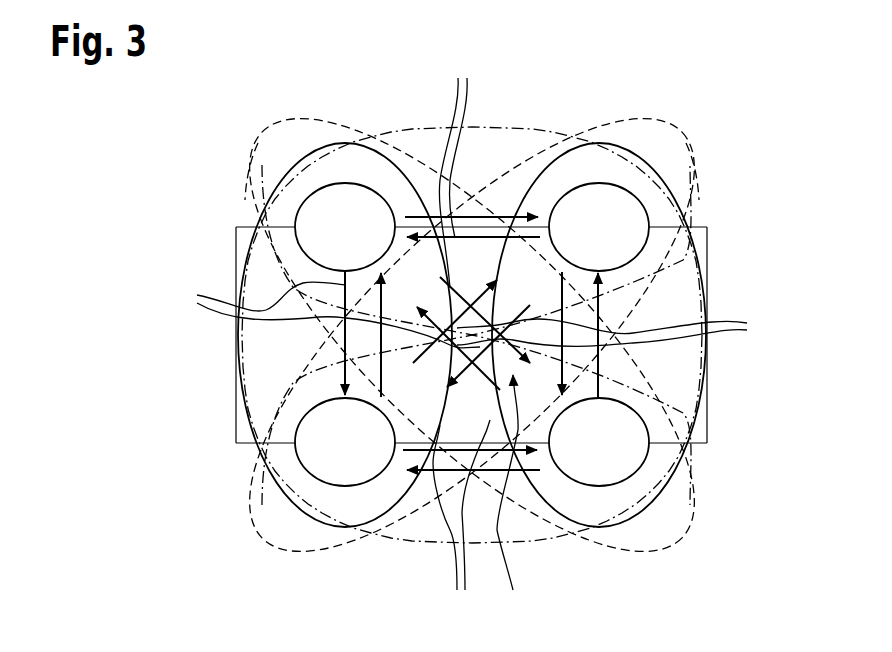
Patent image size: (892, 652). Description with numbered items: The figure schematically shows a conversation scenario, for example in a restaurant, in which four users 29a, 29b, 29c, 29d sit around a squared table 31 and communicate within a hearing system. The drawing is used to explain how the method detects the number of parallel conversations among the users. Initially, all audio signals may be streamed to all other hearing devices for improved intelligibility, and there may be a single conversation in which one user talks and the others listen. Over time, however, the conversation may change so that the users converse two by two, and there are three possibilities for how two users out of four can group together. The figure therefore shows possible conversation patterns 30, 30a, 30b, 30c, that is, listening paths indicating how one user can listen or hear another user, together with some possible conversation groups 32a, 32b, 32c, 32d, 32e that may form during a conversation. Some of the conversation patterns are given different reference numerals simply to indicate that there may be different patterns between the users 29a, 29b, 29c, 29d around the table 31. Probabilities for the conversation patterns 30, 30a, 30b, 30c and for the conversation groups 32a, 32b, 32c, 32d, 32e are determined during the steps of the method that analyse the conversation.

The user 29a is at (332, 205).
The user 29b is at (610, 203).
The user 29c is at (610, 465).
The user 29d is at (333, 465).
The conversation pattern 30 is at (482, 499).
The conversation pattern 30a is at (316, 315).
The conversation pattern 30b is at (460, 171).
The conversation pattern 30c is at (625, 333).
The table 31 is at (707, 425).
The conversation group 32a is at (245, 258).
The conversation group 32b is at (707, 256).
The conversation group 32c is at (298, 133).
The conversation group 32d is at (518, 127).
The conversation group 32e is at (648, 135).